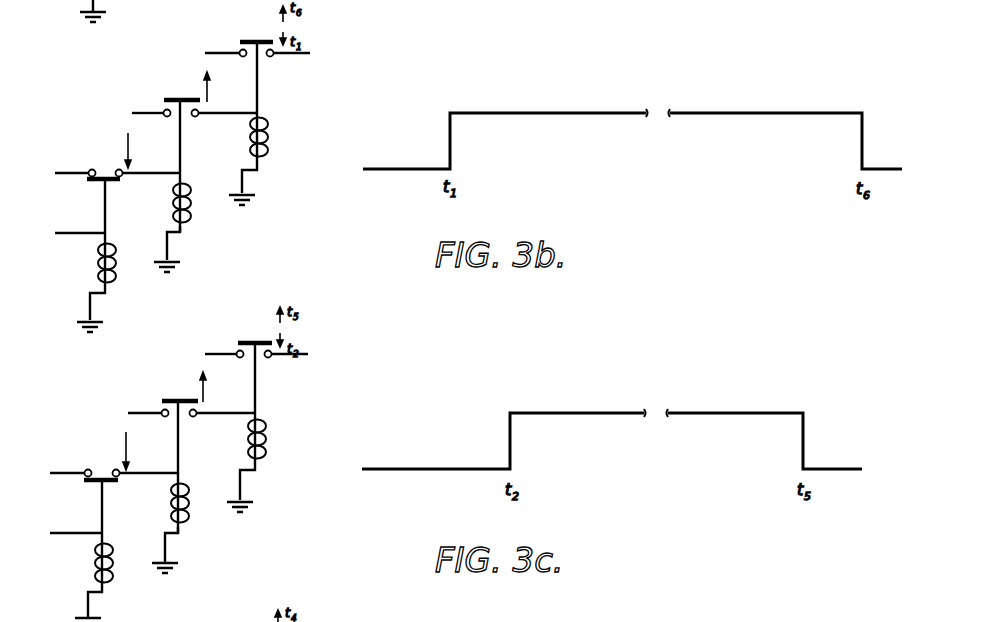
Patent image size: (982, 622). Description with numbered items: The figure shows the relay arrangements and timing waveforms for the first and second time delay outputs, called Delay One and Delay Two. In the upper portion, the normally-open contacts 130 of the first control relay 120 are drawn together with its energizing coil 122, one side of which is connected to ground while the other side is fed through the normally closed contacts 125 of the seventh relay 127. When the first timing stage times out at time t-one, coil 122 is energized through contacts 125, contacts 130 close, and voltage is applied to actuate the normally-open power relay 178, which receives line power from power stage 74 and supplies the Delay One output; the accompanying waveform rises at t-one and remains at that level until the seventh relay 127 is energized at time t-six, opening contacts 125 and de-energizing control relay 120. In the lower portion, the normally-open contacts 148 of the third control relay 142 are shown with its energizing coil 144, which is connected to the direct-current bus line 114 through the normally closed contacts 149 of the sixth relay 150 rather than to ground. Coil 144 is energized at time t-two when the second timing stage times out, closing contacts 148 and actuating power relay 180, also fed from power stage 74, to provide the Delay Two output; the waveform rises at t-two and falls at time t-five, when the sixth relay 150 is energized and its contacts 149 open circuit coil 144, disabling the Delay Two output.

In FIG. 3C, the power stage 74 is at (200, 354).
In FIG. 3B, the power supply line 114 is at (145, 106).
In FIG. 3C, the power supply line 114 is at (140, 412).
In FIG. 3B, the normally-open control relay K1 120 is at (191, 239).
In FIG. 3B, the energizing coil of K1 relay 122 is at (187, 221).
In FIG. 3B, the normally closed contacts of relay K7 125 is at (103, 148).
In FIG. 3B, the relay K7 127 is at (116, 287).
In FIG. 3B, the contacts of K1 relay 130 is at (185, 89).
In FIG. 3C, the normally-open control relay K3 142 is at (192, 524).
In FIG. 3C, the energizing coil of K3 relay 144 is at (186, 481).
In FIG. 3C, the contacts of K3 relay 148 is at (185, 390).
In FIG. 3C, the normally closed contacts of relay K6 149 is at (103, 458).
In FIG. 3C, the relay K6 150 is at (116, 587).
In FIG. 3B, the normally-open power relay 178 is at (276, 133).
In FIG. 3C, the normally-open power relay 180 is at (276, 432).